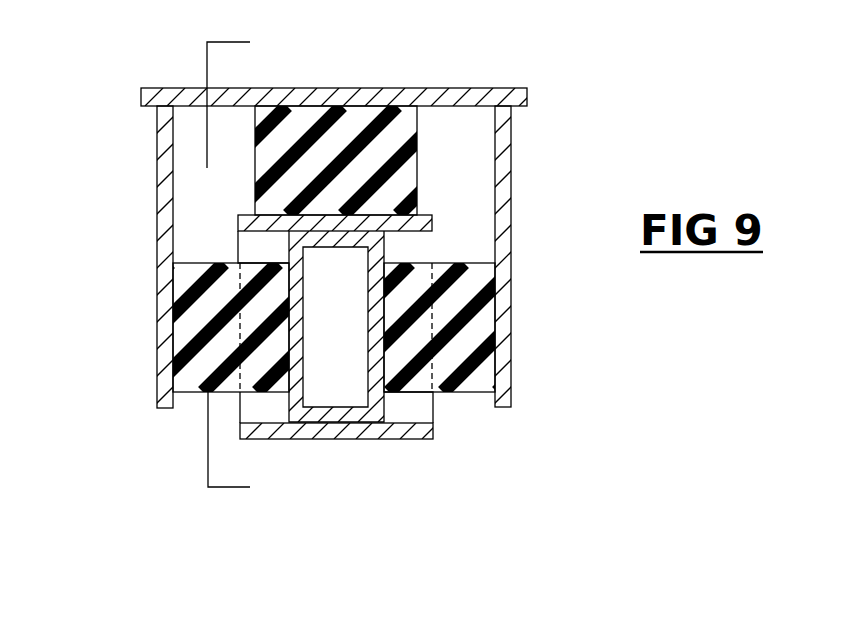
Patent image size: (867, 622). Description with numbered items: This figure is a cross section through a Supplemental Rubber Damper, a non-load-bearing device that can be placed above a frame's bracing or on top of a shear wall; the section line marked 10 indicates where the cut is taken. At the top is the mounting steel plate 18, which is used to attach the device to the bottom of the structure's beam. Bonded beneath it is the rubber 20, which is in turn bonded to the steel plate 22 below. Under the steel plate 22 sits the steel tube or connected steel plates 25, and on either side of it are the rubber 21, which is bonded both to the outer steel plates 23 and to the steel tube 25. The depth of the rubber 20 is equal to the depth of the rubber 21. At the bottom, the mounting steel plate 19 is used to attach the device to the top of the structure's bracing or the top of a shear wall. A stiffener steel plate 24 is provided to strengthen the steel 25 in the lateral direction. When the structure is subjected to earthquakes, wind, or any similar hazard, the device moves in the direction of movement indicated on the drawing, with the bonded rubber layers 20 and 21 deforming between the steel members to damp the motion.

The section line 10- 10 is at (222, 264).
The mounting steel plate 18 is at (449, 87).
The mounting steel plate 19 is at (402, 439).
The rubber 20 is at (255, 123).
The rubber 21 is at (180, 398).
The steel plate 22 is at (405, 232).
The steel plates 23 is at (513, 178).
The stiffener steel plate 24 is at (237, 250).
The steel tube or connected steel plates 25 is at (285, 410).